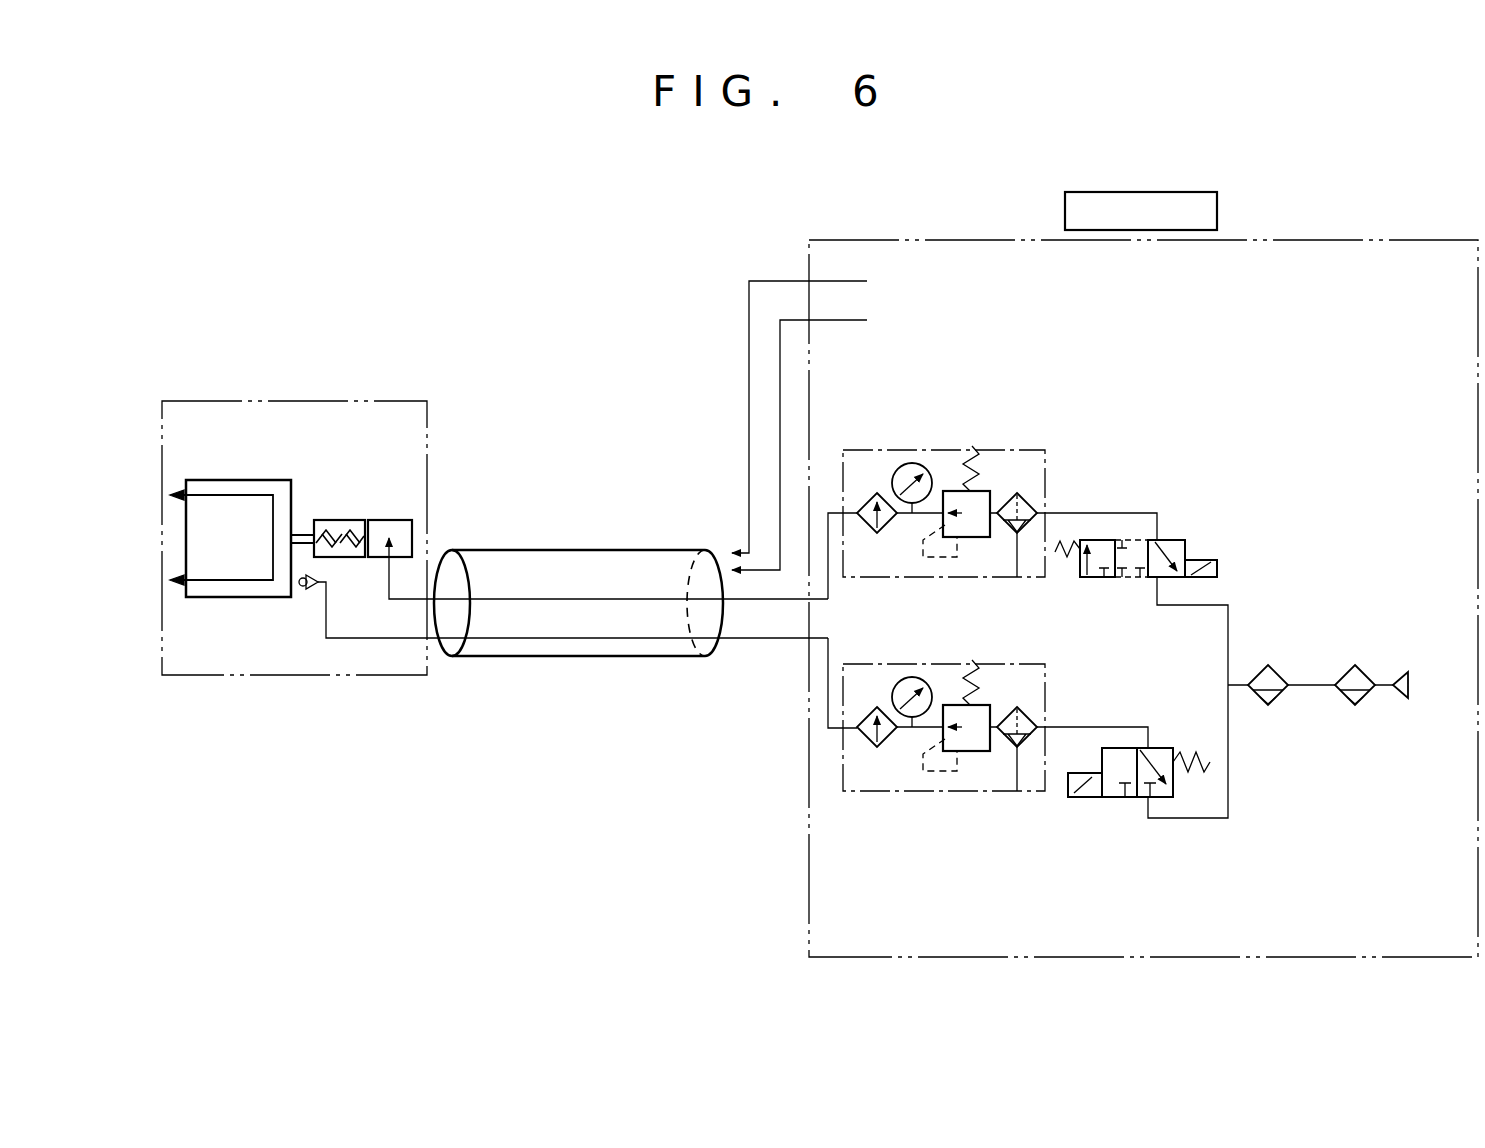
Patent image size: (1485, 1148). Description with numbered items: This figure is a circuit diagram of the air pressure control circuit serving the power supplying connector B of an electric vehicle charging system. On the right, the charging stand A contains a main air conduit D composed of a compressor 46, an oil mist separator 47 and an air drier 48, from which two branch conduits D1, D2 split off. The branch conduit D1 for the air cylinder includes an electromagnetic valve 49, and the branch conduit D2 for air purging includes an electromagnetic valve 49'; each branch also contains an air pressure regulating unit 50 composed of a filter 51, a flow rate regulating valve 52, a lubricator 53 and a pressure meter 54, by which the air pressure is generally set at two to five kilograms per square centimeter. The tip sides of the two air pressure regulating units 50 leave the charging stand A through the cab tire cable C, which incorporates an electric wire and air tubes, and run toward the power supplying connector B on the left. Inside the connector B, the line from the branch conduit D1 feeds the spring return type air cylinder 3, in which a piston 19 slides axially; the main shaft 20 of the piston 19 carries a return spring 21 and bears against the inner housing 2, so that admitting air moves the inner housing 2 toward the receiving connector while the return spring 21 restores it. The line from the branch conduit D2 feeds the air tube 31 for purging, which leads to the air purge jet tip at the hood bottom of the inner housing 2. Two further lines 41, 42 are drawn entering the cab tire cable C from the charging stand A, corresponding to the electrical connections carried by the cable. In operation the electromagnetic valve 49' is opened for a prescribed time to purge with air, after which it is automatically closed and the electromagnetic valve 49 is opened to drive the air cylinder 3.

The charging stand A is at (1217, 208).
The power supplying connector B is at (263, 400).
The cab tire cable C is at (582, 550).
The main air conduit D is at (1308, 688).
The branch conduit for the air cylinder D1 is at (1228, 652).
The branch conduit for air purging D2 is at (1228, 795).
The inner housing 2 is at (245, 480).
The air cylinder 3 is at (397, 519).
The piston 19 is at (371, 519).
The main shaft 20 is at (334, 534).
The return spring 21 is at (338, 558).
The air tube for purging 31 is at (325, 617).
The electrical line 41 is at (819, 409).
The electrical line 42 is at (819, 437).
The compressor 46 is at (1409, 697).
The oil mist separator 47 is at (1355, 664).
The air drier 48 is at (1268, 664).
The electromagnetic valve 49 is at (1148, 635).
The electromagnetic valve 49' is at (1139, 815).
The air pressure regulating unit 50 is at (1005, 444).
The filter 51 is at (1028, 533).
The flow rate regulating valve 52 is at (975, 537).
The lubricator 53 is at (872, 533).
The pressure meter 54 is at (898, 465).